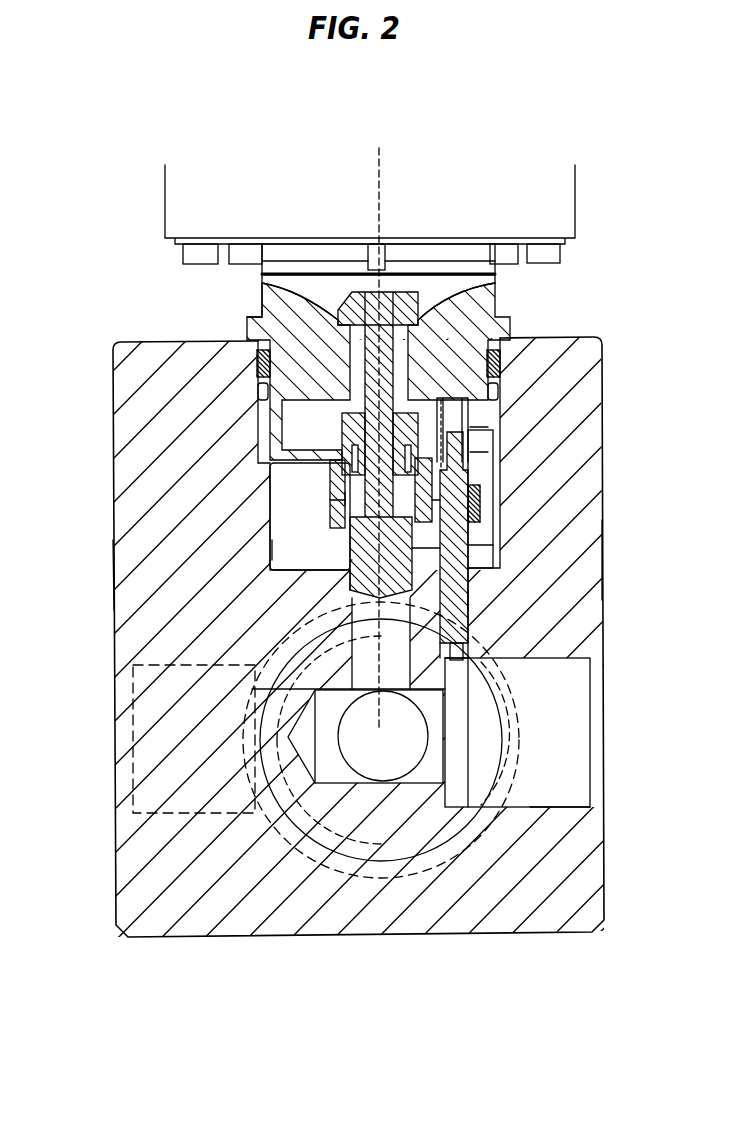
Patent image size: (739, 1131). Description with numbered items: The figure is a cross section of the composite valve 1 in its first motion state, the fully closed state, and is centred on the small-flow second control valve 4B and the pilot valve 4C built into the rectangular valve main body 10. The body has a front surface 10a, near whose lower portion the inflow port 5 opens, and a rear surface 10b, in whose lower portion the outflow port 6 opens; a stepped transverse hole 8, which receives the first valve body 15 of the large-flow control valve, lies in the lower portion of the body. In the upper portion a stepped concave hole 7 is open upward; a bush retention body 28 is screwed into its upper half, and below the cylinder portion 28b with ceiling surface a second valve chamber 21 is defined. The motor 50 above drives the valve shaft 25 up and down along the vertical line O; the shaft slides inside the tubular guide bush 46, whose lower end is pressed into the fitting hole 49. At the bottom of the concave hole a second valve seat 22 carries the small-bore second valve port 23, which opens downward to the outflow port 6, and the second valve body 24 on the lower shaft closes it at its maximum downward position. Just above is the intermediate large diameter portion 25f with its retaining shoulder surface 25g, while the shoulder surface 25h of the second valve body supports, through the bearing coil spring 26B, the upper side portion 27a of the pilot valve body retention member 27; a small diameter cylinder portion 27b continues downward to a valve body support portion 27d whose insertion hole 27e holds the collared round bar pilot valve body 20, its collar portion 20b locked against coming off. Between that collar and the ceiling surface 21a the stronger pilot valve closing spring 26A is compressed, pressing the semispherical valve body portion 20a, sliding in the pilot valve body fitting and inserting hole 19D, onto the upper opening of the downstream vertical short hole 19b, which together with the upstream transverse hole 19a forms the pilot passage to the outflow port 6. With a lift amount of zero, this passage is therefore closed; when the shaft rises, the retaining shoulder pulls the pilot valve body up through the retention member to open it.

The composite valve 1 is at (77, 163).
The axis O is at (378, 426).
The motor 50 is at (166, 238).
The tubular guide bush 46 is at (335, 312).
The fitting hole 49 is at (263, 318).
The valve main body 10 is at (111, 433).
The front surface 10a is at (113, 571).
The rear surface 10b is at (603, 556).
The valve shaft 25 is at (498, 293).
The second valve chamber 21 is at (300, 422).
The ceiling surface 21a is at (258, 320).
The stepped concave hole 7 is at (258, 380).
The bush retention body 28 is at (502, 362).
The cylinder portion with ceiling surface 28b is at (500, 399).
The pilot valve closing spring 26A is at (494, 418).
The bearing coil spring 26B is at (262, 400).
The pilot valve body retention member 27 is at (332, 463).
The upper side portion 27a is at (408, 412).
The small diameter cylinder portion 27b is at (342, 412).
The valve body support portion 27d is at (432, 499).
The insertion hole 27e is at (480, 508).
The intermediate large diameter portion 25f is at (340, 507).
The retaining shoulder surface 25g is at (353, 468).
The shoulder surface 25h is at (345, 498).
The second control valve 4B is at (300, 548).
The pilot valve 4C is at (480, 488).
The pilot valve body 20 is at (469, 608).
The semispherical valve body portion 20a is at (465, 652).
The collar portion 20b is at (470, 452).
The second valve body 24 is at (470, 545).
The second valve seat 22 is at (414, 558).
The pilot valve body fitting and inserting hole 19D is at (494, 598).
The upstream transverse hole 19a is at (505, 670).
The downstream vertical short hole 19b is at (505, 690).
The first valve body 15 is at (362, 772).
The second valve port 23 is at (368, 688).
The stepped transverse hole 8 is at (424, 893).
The inflow port 5 is at (214, 813).
The outflow port 6 is at (540, 807).